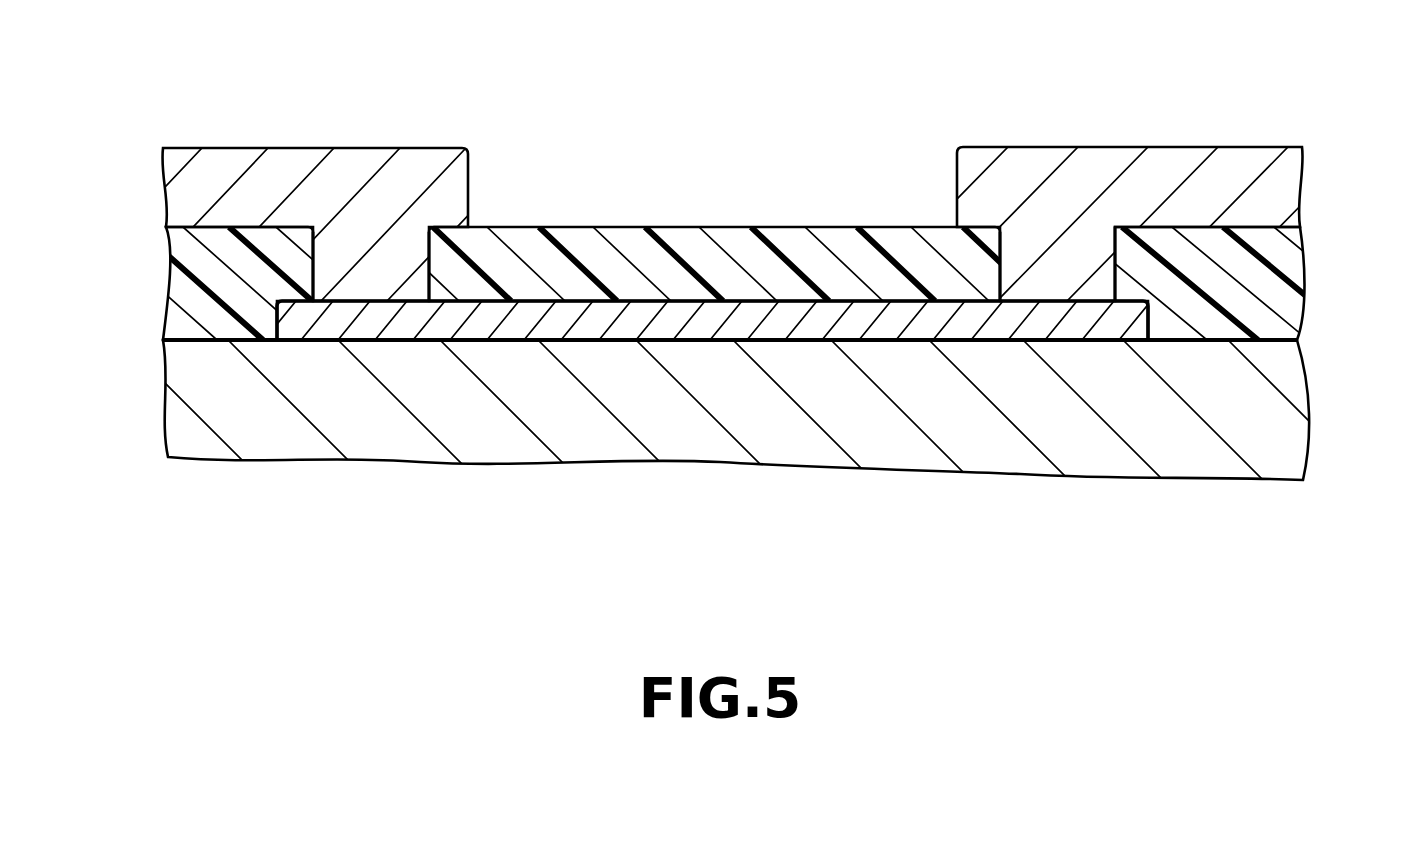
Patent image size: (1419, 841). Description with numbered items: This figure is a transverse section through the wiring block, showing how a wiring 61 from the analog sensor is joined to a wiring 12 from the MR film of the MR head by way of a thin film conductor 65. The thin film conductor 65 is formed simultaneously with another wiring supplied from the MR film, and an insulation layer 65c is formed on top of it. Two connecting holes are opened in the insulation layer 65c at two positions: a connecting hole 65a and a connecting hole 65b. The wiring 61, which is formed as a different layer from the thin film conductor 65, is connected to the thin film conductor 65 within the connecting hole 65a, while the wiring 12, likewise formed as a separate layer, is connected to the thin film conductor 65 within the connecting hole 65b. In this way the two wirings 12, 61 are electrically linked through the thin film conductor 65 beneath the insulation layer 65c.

The wiring 12 is at (303, 157).
The wiring 61 is at (1103, 167).
The thin film conductor 65 is at (699, 330).
The connecting hole 65a is at (1000, 265).
The connecting hole 65b is at (313, 262).
The insulation layer 65c is at (708, 243).